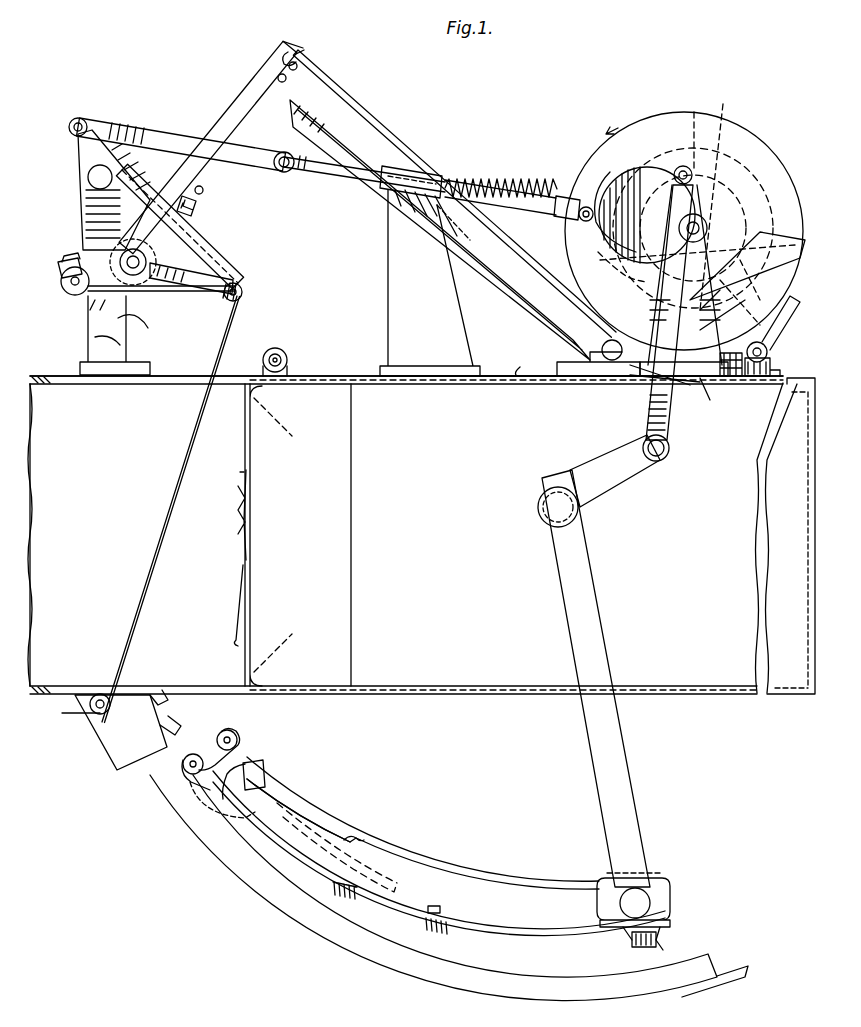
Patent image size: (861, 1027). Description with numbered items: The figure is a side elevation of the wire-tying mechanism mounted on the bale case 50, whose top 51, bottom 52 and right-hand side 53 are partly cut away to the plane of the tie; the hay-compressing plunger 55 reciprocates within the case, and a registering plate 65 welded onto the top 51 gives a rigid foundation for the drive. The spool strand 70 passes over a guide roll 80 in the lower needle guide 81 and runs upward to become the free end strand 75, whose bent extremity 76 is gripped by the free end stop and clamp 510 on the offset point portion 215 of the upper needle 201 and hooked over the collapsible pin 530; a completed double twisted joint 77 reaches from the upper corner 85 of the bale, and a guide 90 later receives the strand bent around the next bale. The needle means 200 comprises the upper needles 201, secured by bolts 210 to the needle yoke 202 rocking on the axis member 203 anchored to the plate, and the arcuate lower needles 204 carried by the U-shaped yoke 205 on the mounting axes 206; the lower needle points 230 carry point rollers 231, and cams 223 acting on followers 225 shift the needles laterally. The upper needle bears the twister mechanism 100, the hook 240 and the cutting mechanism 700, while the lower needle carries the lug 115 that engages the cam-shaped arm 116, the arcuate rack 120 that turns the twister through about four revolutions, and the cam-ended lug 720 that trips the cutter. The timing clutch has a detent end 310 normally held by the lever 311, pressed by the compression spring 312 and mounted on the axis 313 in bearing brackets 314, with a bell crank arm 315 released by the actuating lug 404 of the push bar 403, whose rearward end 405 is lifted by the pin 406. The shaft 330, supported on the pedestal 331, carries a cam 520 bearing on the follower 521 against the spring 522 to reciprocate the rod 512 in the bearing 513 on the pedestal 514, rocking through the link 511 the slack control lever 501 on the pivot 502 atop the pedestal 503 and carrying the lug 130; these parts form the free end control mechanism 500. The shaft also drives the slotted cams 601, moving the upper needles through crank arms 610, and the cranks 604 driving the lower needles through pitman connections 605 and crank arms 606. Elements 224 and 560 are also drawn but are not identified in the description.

The bale case 50 is at (405, 547).
The top of the bale case 51 is at (310, 380).
The bottom of the bale case 52 is at (675, 696).
The right hand side of the bale case 53 is at (415, 535).
The plunger 55 is at (137, 535).
The registering plate 65 is at (508, 376).
The spool strand 70 is at (145, 630).
The free end strand 75 is at (186, 300).
The extremity of the free end strand 76 is at (230, 640).
The double twisted joint 77 is at (244, 510).
The guide roll 80 is at (92, 720).
The lower needle guide 81 is at (130, 780).
The upper corner of the bale 85 is at (247, 392).
The guide 90 is at (277, 348).
The twister mechanism 100 is at (180, 272).
The driving lug 115 is at (298, 800).
The cam-shaped arm 116 is at (118, 250).
The arcuate rack 120 is at (348, 822).
The lug 130 is at (120, 205).
The needle means 200 is at (454, 462).
The upper needles 201 is at (238, 108).
The needle yoke 202 is at (420, 162).
The pivoted axis member 203 is at (598, 348).
The lower needles 204 is at (420, 845).
The U-shaped needle yoke 205 is at (630, 812).
The mounting axes 206 is at (565, 505).
The machine screws or bolts 210 is at (304, 64).
The lower portions of the upper needles 215 is at (80, 260).
The cams 223 is at (375, 910).
The outer curved rail 224 is at (500, 990).
The cam followers 225 is at (664, 930).
The points of the lower needles 230 is at (250, 760).
The point rollers 231 is at (229, 732).
The hook 240 is at (296, 46).
The clutch detent end 310 is at (655, 296).
The lever 311 is at (702, 384).
The compression spring 312 is at (728, 380).
The axis 313 is at (778, 340).
The bearing brackets 314 is at (770, 354).
The bell crank arm 315 is at (748, 292).
The transversely extending shaft 330 is at (706, 226).
The pedestal 331 is at (640, 380).
The push bar 403 is at (790, 230).
The actuating lug 404 is at (706, 228).
The rearward end of the push bar 405 is at (725, 198).
The axially projecting pin 406 is at (704, 238).
The free end control mechanism 500 is at (359, 176).
The slack control lever 501 is at (203, 246).
The pivot 502 is at (87, 178).
The pedestal 503 is at (86, 338).
The free end stop and clamp 510 is at (70, 290).
The link connection 511 is at (160, 130).
The connecting rod 512 is at (342, 188).
The bearing 513 is at (408, 192).
The pedestal 514 is at (388, 290).
The cam 520 is at (603, 168).
The cam follower 521 is at (580, 205).
The retracting compression spring 522 is at (519, 194).
The collapsible pin 530 is at (246, 296).
The rail clamp 560 is at (436, 922).
The slotted cams 601 is at (684, 213).
The cranks 604 is at (670, 170).
The pitman connections 605 is at (668, 426).
The crank arms 606 is at (625, 470).
The crank arms 610 is at (614, 265).
The cutting mechanism 700 is at (200, 212).
The cam ended lug 720 is at (362, 834).